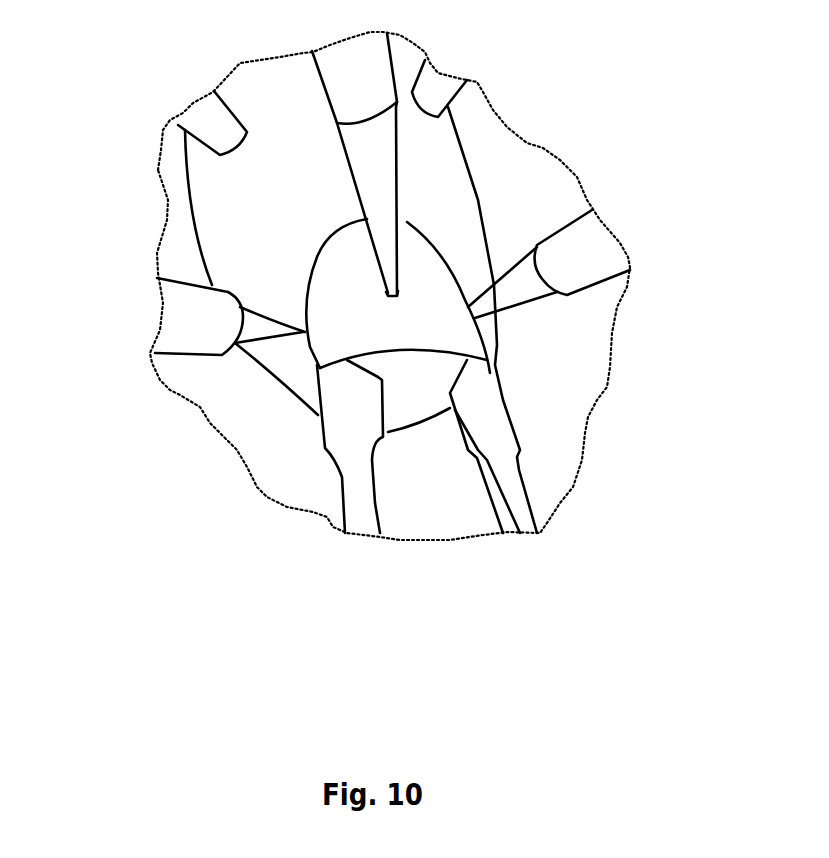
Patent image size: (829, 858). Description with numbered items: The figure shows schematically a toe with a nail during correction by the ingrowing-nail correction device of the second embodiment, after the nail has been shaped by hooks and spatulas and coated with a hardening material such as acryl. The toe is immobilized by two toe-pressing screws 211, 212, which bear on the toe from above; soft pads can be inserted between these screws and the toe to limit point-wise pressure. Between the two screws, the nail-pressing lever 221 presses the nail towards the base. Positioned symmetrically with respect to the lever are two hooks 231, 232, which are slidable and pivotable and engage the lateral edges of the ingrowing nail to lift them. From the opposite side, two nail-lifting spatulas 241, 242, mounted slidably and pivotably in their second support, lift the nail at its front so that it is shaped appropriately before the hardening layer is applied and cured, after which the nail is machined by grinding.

The toe-pressing screw 211 is at (442, 88).
The toe-pressing screw 212 is at (210, 125).
The nail-pressing lever 221 is at (387, 205).
The hook 231 is at (580, 268).
The hook 232 is at (205, 308).
The nail-lifting spatula 241 is at (483, 420).
The nail-lifting spatula 242 is at (343, 416).